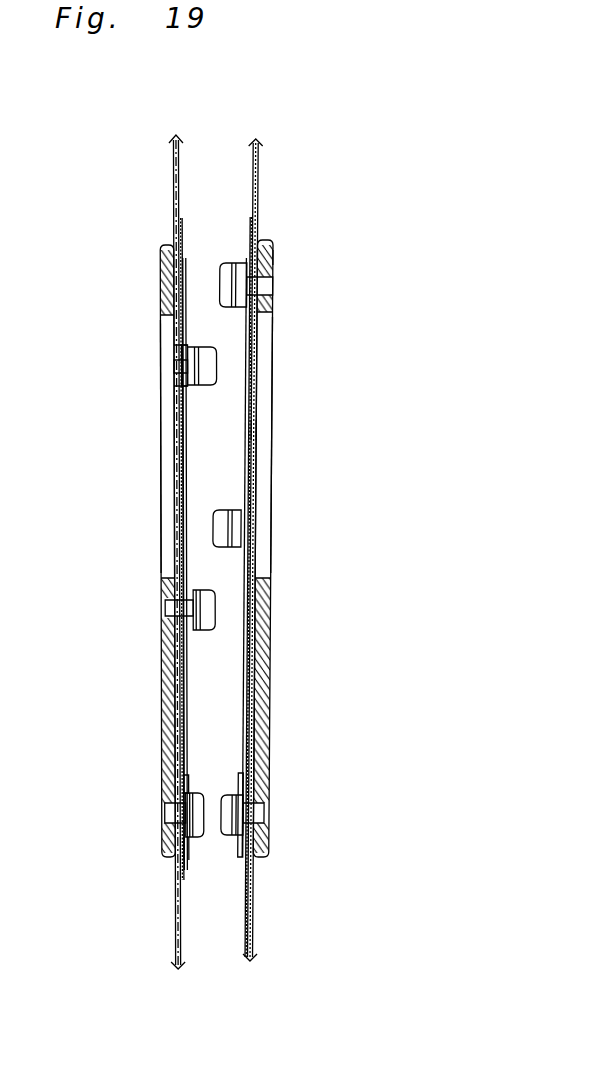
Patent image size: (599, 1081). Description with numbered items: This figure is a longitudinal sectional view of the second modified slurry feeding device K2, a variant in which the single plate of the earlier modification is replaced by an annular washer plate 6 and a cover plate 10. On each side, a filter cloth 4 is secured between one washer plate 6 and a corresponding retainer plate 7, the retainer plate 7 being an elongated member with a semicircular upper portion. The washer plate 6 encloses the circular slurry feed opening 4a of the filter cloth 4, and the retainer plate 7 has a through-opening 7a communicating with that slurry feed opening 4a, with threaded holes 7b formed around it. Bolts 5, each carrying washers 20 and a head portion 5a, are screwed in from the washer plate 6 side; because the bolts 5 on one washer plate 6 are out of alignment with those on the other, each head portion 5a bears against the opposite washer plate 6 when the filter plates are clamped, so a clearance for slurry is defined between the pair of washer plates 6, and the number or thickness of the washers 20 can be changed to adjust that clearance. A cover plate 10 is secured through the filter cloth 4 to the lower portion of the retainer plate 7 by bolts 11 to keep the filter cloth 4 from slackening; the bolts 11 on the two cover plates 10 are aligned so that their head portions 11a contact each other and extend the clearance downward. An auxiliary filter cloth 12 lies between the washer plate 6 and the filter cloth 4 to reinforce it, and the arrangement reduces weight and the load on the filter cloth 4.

The filter cloth 4 is at (172, 177).
The slurry feed opening 4a is at (262, 430).
The auxiliary filter cloth 12 is at (184, 215).
The annular washer plate 6 is at (261, 488).
The retainer plate 7 is at (232, 572).
The through-opening 7a is at (165, 472).
The threaded holes 7b is at (168, 836).
The bolts 5 is at (204, 388).
The head portion 5a is at (225, 287).
The washers 20 is at (186, 353).
The bolts 11 is at (199, 847).
The cover plate 10 is at (194, 842).
The head portions 11a is at (193, 813).
The slurry feeding device K2 is at (286, 258).